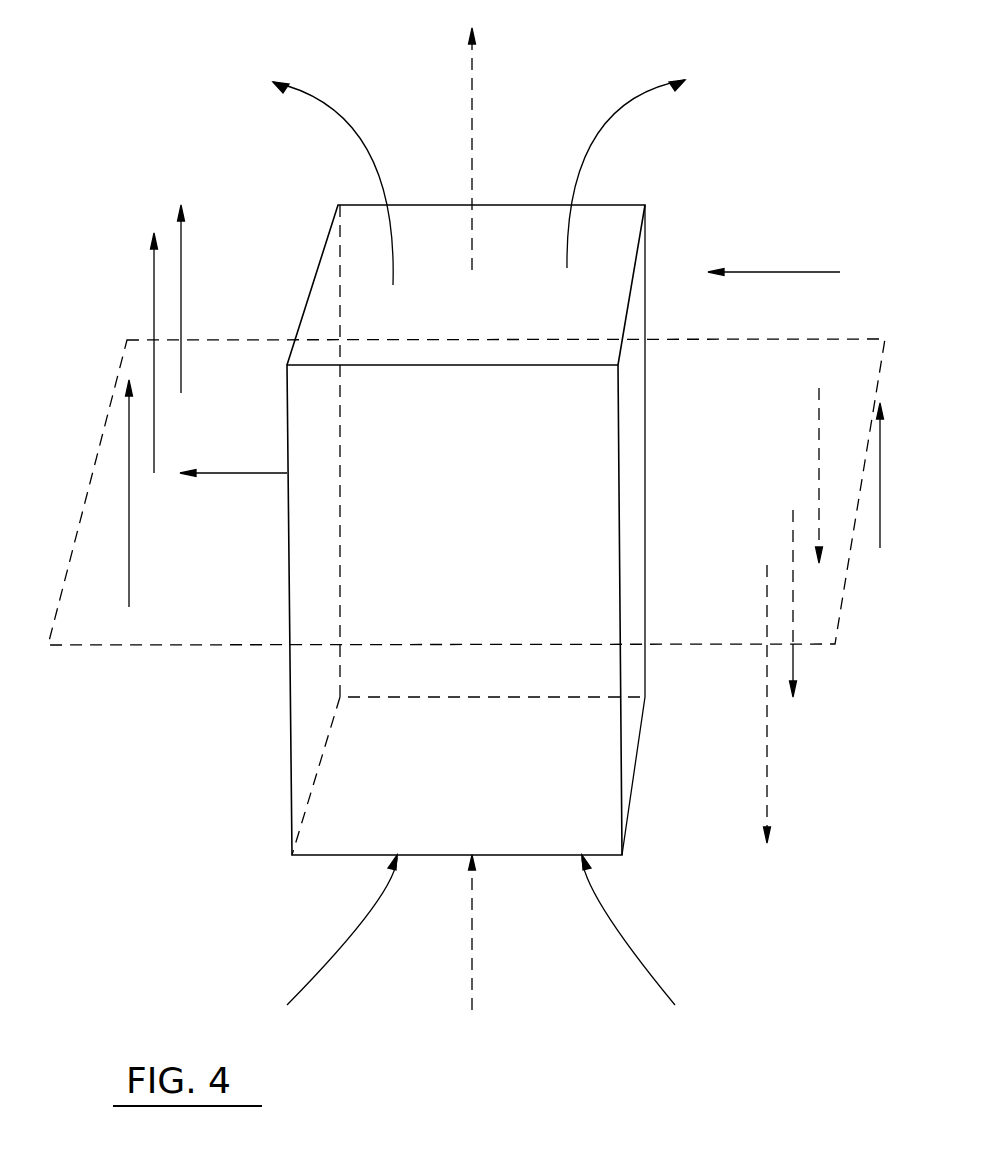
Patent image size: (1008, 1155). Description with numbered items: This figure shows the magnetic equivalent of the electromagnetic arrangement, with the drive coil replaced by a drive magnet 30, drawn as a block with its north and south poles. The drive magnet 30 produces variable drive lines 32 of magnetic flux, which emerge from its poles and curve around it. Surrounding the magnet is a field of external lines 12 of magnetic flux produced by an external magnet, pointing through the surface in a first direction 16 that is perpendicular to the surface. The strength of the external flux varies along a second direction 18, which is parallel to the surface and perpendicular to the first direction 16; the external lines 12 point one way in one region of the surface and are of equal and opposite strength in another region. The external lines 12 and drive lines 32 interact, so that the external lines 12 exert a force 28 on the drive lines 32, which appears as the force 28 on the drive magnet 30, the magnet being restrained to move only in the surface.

The external lines of magnetic flux 12 is at (145, 303).
The first direction 16 is at (880, 517).
The second direction 18 is at (790, 272).
The force 28 is at (220, 473).
The drive magnet 30 is at (466, 530).
The drive lines of magnetic flux 32 is at (472, 110).